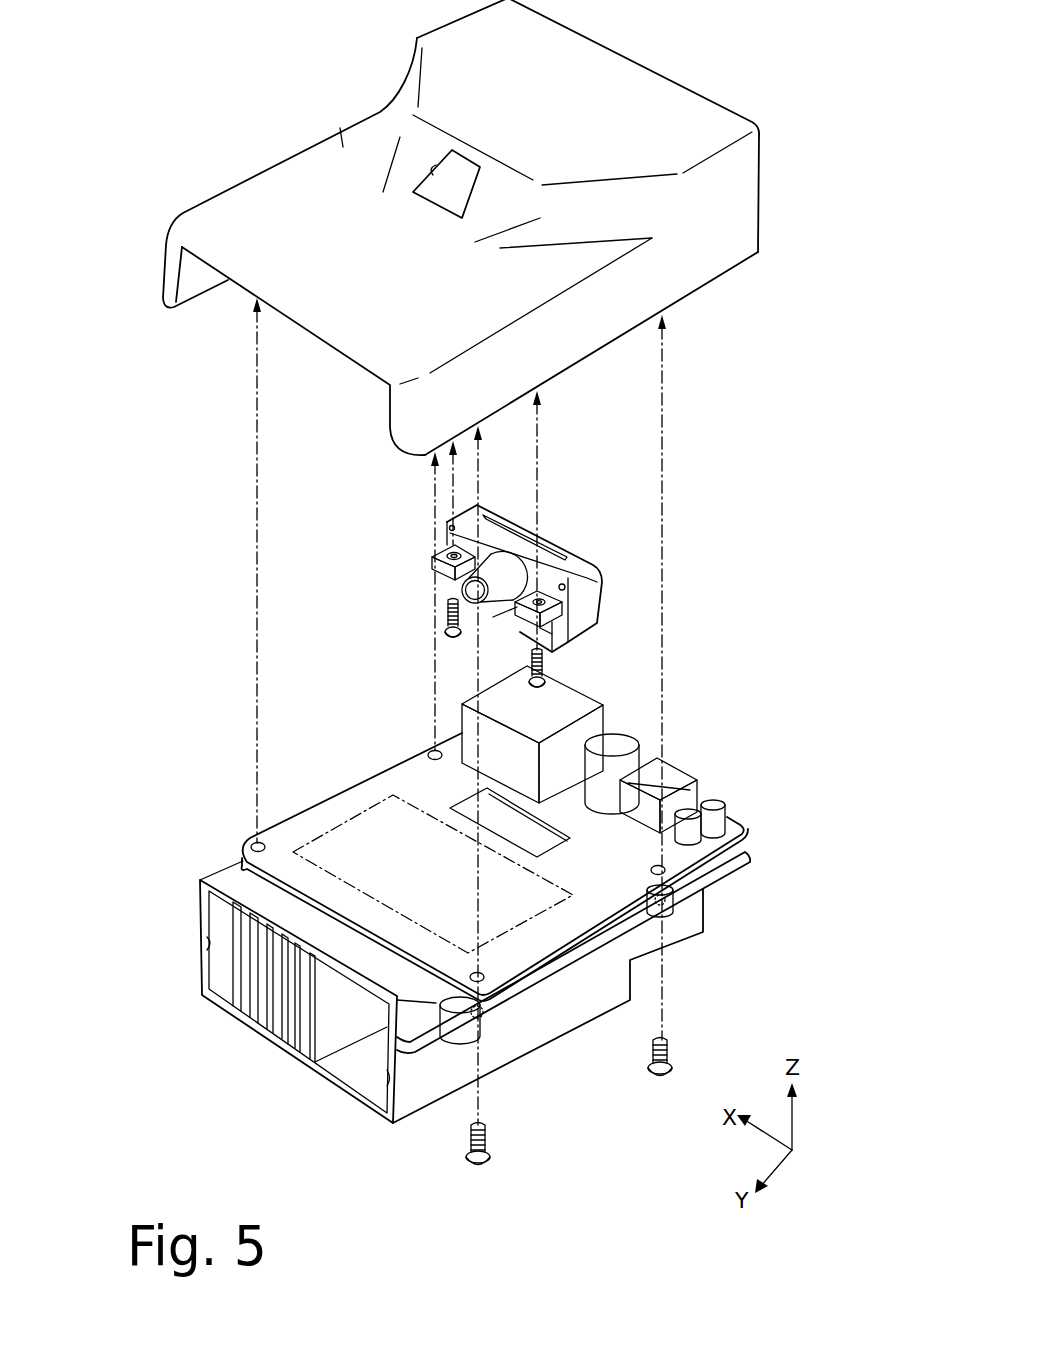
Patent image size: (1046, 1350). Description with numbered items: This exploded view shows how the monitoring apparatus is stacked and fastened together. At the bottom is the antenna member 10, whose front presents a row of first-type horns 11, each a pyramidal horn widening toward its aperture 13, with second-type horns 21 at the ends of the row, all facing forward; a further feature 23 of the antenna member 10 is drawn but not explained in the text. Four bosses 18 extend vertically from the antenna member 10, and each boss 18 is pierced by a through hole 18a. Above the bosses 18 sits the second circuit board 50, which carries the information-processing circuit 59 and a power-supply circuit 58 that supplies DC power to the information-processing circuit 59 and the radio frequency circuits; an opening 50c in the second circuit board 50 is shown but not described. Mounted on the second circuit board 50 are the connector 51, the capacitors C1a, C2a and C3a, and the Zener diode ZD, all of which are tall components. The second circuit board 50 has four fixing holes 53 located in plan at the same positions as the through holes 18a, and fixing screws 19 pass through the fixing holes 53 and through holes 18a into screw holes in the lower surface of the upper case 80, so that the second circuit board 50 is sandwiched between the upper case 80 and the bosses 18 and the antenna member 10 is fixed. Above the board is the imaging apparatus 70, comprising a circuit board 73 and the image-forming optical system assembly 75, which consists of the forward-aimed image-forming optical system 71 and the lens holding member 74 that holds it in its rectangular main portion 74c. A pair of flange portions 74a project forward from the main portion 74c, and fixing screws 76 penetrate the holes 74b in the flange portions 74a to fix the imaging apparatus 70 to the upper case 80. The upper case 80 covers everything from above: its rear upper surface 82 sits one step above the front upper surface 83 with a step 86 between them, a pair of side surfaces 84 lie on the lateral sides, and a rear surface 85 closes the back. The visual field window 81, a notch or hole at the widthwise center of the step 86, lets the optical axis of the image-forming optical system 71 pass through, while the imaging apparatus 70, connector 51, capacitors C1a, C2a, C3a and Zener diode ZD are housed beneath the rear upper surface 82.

The antenna member 10 is at (427, 1019).
The first-type horns 11 is at (252, 1027).
The aperture 13 is at (237, 980).
The bosses 18 is at (606, 1004).
The through hole 18a is at (666, 906).
The fixing screws 19 is at (480, 1172).
The second-type horns 21 is at (210, 916).
The rim 23 is at (208, 944).
The second circuit board 50 is at (525, 849).
The opening of circuit board 50c is at (468, 815).
The connector 51 is at (553, 690).
The fixing holes 53 is at (430, 752).
The power-supply circuit 58 is at (652, 718).
The information-processing circuit 59 is at (327, 830).
The imaging apparatus 70 is at (498, 572).
The image-forming optical system 71 is at (490, 576).
The circuit board 73 is at (560, 540).
The lens holding member 74 is at (526, 555).
The flange portions 74a is at (442, 568).
The hole 74b is at (562, 612).
The main portion 74c is at (590, 594).
The image-forming optical system assembly 75 is at (498, 555).
The fixing screws 76 is at (527, 683).
The upper case 80 is at (767, 203).
The visual field window 81 is at (433, 175).
The rear upper surface 82 is at (588, 73).
The front upper surface 83 is at (343, 147).
The side surfaces 84 is at (618, 323).
The rear surface 85 is at (760, 157).
The step 86 is at (628, 207).
The capacitor C1a is at (617, 734).
The capacitor C2a is at (716, 803).
The capacitor C3a is at (693, 808).
The Zener diode ZD is at (672, 773).